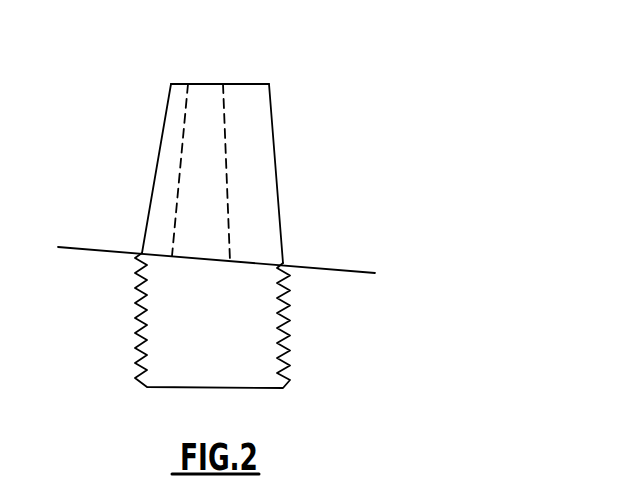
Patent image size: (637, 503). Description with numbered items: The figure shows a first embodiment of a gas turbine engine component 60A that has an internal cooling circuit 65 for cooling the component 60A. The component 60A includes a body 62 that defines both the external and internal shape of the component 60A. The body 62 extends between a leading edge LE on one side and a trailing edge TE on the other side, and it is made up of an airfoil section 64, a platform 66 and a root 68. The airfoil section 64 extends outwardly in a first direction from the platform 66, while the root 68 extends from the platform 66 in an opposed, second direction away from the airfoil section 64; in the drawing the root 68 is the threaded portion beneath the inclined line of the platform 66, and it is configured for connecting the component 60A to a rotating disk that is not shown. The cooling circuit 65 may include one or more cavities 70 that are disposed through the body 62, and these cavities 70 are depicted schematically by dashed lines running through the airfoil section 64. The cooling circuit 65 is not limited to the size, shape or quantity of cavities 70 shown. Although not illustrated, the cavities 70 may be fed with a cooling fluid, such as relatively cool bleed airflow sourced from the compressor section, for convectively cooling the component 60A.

The component 60A is at (260, 208).
The body 62 is at (150, 116).
The airfoil section 64 is at (265, 229).
The internal cooling circuit 65 is at (210, 68).
The platform 66 is at (348, 273).
The root 68 is at (250, 342).
The cavities 70 is at (227, 184).
The leading edge LE is at (149, 203).
The trailing edge TE is at (277, 140).